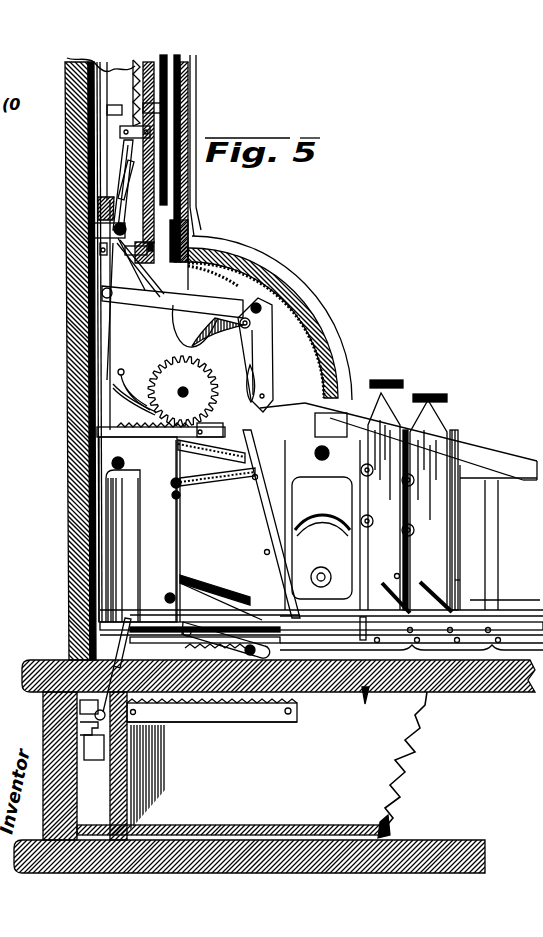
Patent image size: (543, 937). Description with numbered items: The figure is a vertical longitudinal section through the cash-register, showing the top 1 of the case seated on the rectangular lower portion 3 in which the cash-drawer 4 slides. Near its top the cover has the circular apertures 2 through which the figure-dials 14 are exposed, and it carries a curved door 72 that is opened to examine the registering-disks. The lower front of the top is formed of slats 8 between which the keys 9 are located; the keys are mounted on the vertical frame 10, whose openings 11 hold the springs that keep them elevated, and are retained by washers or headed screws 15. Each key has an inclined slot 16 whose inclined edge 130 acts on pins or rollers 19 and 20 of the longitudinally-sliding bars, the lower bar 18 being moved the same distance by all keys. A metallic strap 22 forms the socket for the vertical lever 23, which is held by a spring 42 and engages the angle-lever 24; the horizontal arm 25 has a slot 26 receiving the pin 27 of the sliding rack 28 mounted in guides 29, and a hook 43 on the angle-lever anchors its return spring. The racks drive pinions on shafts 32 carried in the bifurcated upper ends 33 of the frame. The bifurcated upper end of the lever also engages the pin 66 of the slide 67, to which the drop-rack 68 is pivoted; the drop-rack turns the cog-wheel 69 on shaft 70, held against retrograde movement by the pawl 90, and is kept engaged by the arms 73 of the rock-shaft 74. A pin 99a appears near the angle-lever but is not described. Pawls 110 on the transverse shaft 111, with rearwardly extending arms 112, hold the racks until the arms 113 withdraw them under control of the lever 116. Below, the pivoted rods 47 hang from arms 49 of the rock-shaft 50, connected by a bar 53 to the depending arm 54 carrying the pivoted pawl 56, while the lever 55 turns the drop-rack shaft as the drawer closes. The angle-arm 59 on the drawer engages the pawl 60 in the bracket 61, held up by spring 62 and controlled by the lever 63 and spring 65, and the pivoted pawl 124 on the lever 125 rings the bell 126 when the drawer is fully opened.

The top of the case 1 is at (66, 240).
The transverse shaft 111 is at (90, 250).
The circular apertures 2 is at (186, 96).
The figure-dial 14 is at (188, 201).
The upper ends of the vertical frame 33 is at (133, 100).
The shaft 32 is at (120, 131).
The guides 29 is at (123, 155).
The spring-actuated pawl 110 is at (120, 172).
The arm 113 is at (98, 210).
The rearwardly-extending arm 112 is at (100, 230).
The sliding rack 28 is at (128, 262).
The horizontal arm 25 is at (140, 285).
The pin 27 is at (142, 292).
The curved door 72 is at (297, 290).
The slot 26 is at (172, 311).
The pivot pin 99a is at (256, 307).
The lateral projection or hook 43 is at (264, 394).
The angle-lever 24 is at (297, 401).
The shaft 70 is at (183, 388).
The cog-wheel 69 is at (208, 382).
The spring-actuated pawl 90 is at (121, 370).
The slide 67 is at (170, 424).
The drop-rack 68 is at (152, 437).
The lever 116 is at (108, 540).
The arm 73 is at (211, 454).
The pin 66 is at (260, 524).
The spring 42 is at (217, 489).
The rock-shaft 74 is at (175, 490).
The vertical lever 23 is at (322, 525).
The bell 126 is at (320, 520).
The metallic strap 22 is at (300, 612).
The slats 8 is at (500, 455).
The washers or headed screws 15 is at (384, 495).
The key 9 is at (424, 502).
The openings 11 is at (465, 520).
The vertical frame 10 is at (498, 544).
The inclined slot 16 is at (450, 575).
The pins or rollers 19 is at (505, 600).
The longitudinally-sliding bar 18 is at (321, 630).
The pins or rollers 20 is at (410, 630).
The inclined edge 130 is at (391, 574).
The pivoted rod 47 is at (221, 589).
The arm 49 is at (175, 582).
The rock-shaft 50 is at (160, 593).
The lever 55 is at (215, 640).
The depending arm 54 is at (200, 625).
The spiral spring 65 is at (112, 636).
The rectangular lower portion 3 is at (271, 767).
The cash-drawer 4 is at (388, 765).
The pivoted pawl 124 is at (366, 700).
The lever 63 is at (113, 692).
The bracket 61 is at (80, 715).
The spiral spring 62 is at (80, 730).
The angle-arm 59 is at (94, 755).
The pawl 60 is at (130, 722).
The lever 125 is at (262, 722).
The bar 53 is at (237, 668).
The pivoted pawl 56 is at (261, 668).